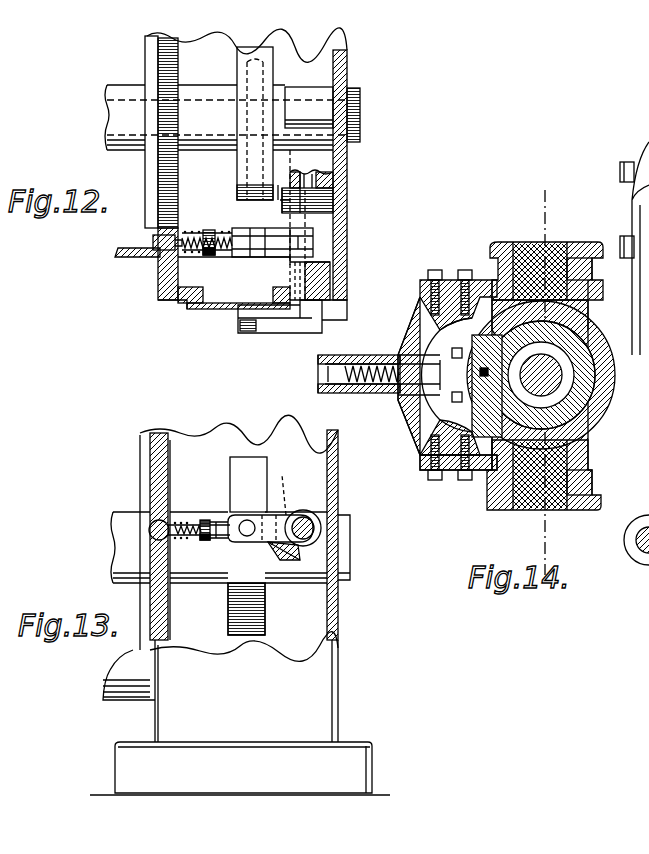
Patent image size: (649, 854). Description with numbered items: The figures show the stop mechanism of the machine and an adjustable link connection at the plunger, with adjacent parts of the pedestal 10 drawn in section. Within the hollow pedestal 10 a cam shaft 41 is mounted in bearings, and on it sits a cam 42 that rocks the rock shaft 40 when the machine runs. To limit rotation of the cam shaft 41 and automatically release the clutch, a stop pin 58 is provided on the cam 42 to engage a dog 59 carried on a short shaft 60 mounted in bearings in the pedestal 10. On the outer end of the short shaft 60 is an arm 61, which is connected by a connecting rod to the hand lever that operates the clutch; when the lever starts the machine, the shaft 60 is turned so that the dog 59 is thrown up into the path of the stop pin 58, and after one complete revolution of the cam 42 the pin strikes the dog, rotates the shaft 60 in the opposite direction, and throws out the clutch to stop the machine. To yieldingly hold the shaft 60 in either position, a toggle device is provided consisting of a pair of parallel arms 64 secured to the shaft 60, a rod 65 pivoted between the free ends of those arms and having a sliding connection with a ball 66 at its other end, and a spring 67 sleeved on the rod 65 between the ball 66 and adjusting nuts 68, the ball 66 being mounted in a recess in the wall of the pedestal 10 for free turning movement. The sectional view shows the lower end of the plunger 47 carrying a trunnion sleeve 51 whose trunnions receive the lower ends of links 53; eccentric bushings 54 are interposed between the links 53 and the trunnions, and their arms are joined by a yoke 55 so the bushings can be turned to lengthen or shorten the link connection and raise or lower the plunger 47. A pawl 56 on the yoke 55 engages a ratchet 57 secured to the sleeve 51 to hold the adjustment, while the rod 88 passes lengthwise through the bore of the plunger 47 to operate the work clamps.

In FIG. 12, the pedestal 10 is at (348, 73).
In FIG. 13, the pedestal 10 is at (340, 628).
In FIG. 14, the rock shaft 40 is at (634, 556).
In FIG. 12, the cam shaft 41 is at (195, 100).
In FIG. 13, the cam shaft 41 is at (203, 583).
In FIG. 12, the cam 42 is at (270, 70).
In FIG. 13, the cam 42 is at (235, 468).
In FIG. 14, the plunger 47 is at (575, 370).
In FIG. 14, the trunnion sleeve 51 is at (595, 418).
In FIG. 14, the links 53 is at (590, 268).
In FIG. 14, the eccentric bushings 54 is at (570, 244).
In FIG. 14, the yoke 55 is at (412, 318).
In FIG. 14, the pawl 56 is at (410, 395).
In FIG. 14, the ratchet 57 is at (435, 355).
In FIG. 12, the stop pin 58 is at (278, 185).
In FIG. 13, the stop pin 58 is at (286, 492).
In FIG. 12, the dog 59 is at (285, 197).
In FIG. 13, the dog 59 is at (288, 560).
In FIG. 12, the short shaft 60 is at (325, 282).
In FIG. 13, the short shaft 60 is at (303, 528).
In FIG. 12, the arm 61 is at (287, 333).
In FIG. 12, the parallel arms 64 is at (270, 257).
In FIG. 13, the parallel arms 64 is at (254, 542).
In FIG. 12, the rod 65 is at (210, 235).
In FIG. 13, the rod 65 is at (216, 520).
In FIG. 12, the ball 66 is at (145, 257).
In FIG. 13, the ball 66 is at (150, 520).
In FIG. 12, the spring 67 is at (190, 255).
In FIG. 13, the spring 67 is at (183, 518).
In FIG. 12, the adjusting nuts 68 is at (210, 256).
In FIG. 13, the adjusting nuts 68 is at (204, 541).
In FIG. 14, the rod 88 is at (565, 355).